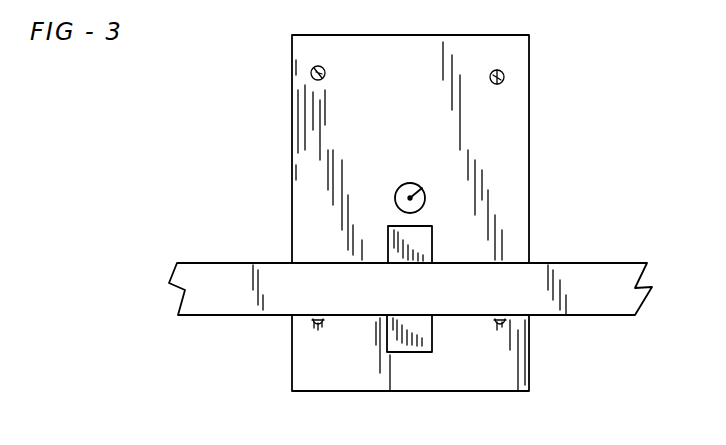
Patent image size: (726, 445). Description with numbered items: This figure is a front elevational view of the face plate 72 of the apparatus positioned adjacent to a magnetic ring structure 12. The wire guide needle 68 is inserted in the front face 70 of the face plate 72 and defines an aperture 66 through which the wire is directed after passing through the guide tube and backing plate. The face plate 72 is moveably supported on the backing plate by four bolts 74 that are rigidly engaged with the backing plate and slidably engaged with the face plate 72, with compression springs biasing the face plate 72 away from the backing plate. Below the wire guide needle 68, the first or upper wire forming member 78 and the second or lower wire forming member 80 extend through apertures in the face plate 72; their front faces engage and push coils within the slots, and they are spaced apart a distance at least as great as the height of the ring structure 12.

The ring structure 12 is at (577, 263).
The aperture 66 is at (410, 198).
The wire guide needle 68 is at (422, 188).
The front face 70 is at (300, 177).
The face plate 72 is at (530, 102).
The bolts 74 is at (490, 78).
The upper wire forming member 78 is at (422, 242).
The lower wire forming member 80 is at (408, 330).